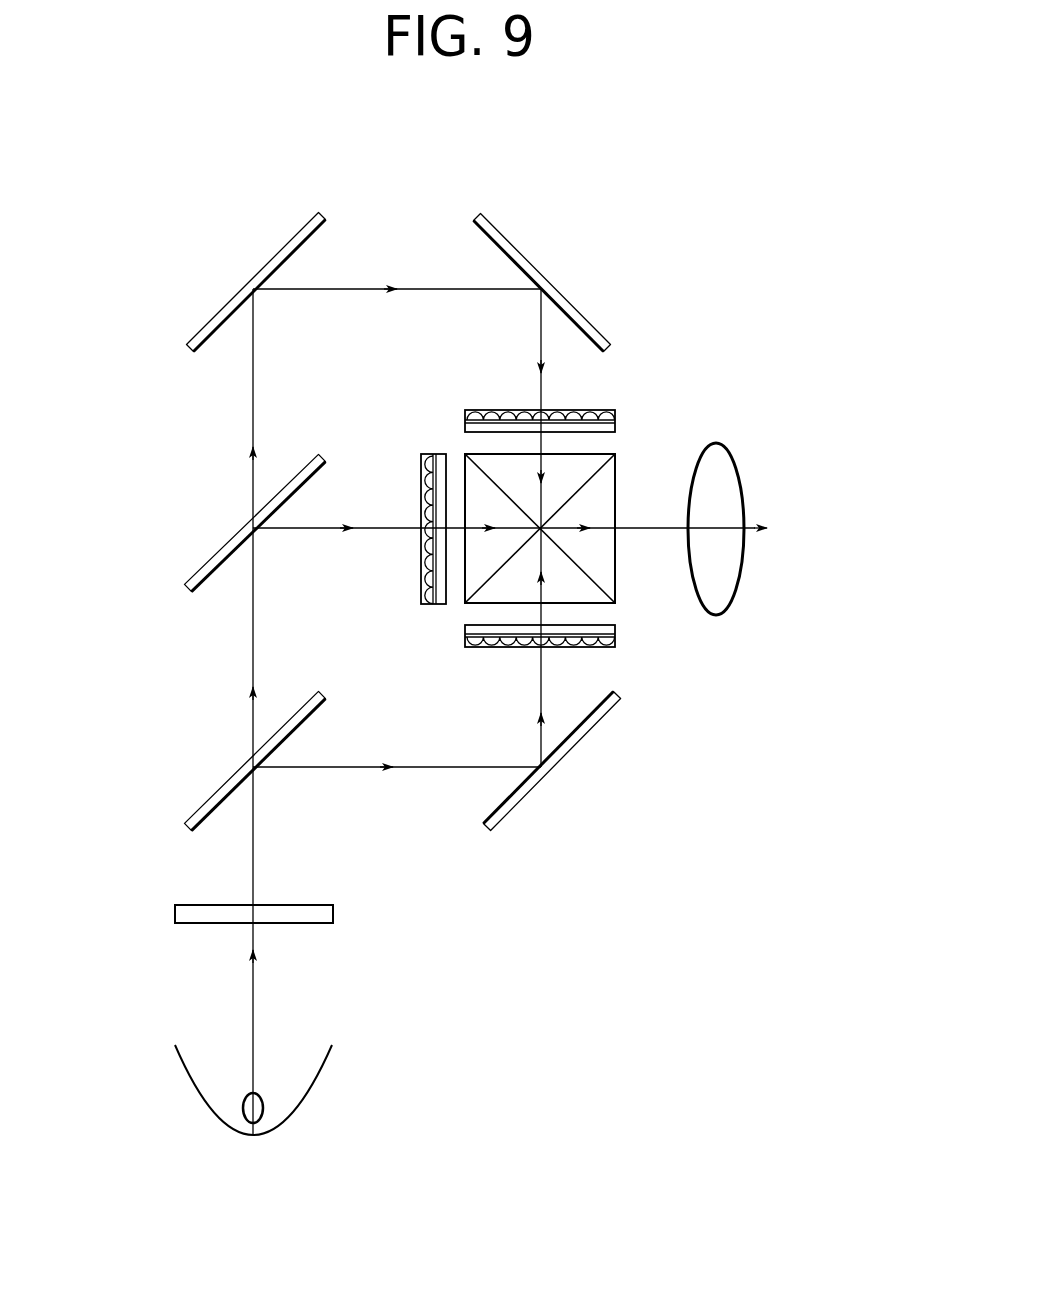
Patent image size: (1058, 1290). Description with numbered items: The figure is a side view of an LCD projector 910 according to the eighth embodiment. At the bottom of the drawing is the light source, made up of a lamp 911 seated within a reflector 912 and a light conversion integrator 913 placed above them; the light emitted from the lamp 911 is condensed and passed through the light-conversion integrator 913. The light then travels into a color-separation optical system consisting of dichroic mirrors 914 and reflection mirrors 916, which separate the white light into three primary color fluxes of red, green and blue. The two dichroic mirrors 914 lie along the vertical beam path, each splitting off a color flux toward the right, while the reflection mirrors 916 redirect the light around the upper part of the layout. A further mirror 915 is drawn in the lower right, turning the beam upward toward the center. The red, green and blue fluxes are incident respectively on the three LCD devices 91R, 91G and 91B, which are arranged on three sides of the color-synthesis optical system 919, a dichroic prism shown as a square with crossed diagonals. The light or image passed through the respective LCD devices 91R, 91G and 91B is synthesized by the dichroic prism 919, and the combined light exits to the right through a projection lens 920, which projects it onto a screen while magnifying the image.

The LCD projector 910 is at (598, 166).
The lamp 911 is at (262, 1112).
The reflector 912 is at (333, 1075).
The light conversion integrator 913 is at (293, 923).
The dichroic mirror 914 is at (214, 551).
The reflecting mirror 915 is at (587, 737).
The reflection mirror 916 is at (214, 303).
The color-synthesis optical system 919 is at (463, 593).
The LCD device for blue color 91B is at (617, 423).
The LCD device for green color 91G is at (427, 453).
The LCD device for red color 91R is at (617, 630).
The projection lens 920 is at (743, 573).